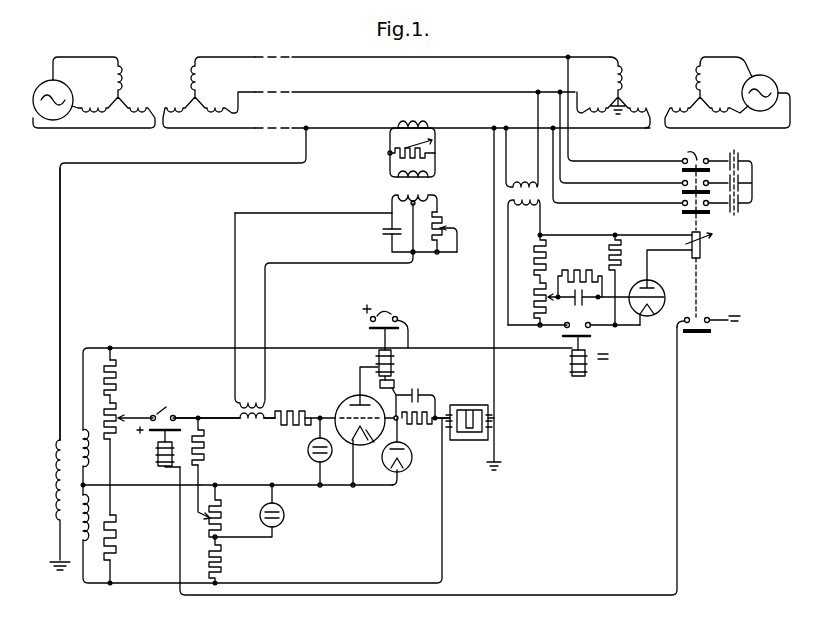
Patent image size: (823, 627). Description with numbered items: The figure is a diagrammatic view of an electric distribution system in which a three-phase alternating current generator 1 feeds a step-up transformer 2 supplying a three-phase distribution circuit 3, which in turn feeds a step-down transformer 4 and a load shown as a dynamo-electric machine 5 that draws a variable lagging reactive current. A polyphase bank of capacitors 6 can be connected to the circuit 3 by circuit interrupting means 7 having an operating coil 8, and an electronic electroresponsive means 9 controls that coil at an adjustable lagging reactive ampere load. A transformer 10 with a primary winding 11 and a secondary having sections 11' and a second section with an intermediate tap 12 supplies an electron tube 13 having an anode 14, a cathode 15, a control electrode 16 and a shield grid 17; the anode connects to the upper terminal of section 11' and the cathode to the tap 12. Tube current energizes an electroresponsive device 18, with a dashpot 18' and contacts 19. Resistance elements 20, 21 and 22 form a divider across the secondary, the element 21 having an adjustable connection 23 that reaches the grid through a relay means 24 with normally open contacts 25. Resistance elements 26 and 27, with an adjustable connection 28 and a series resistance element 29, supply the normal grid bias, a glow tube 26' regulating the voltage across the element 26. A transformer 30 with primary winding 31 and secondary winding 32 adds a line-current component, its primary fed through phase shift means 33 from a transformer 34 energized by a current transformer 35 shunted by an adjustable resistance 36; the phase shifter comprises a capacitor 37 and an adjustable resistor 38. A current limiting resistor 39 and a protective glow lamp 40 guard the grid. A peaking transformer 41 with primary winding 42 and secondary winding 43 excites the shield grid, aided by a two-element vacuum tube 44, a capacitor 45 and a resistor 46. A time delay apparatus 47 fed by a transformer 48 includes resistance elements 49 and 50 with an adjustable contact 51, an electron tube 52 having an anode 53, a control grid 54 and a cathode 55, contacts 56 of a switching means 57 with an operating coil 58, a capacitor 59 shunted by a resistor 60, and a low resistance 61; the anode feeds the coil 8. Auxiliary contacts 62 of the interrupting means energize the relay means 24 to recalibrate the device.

The three-phase alternating current generator 1 is at (60, 86).
The step-up transformer 2 is at (168, 95).
The three phase distribution circuit 3 is at (335, 128).
The step-down transformer 4 is at (659, 89).
The dynamo-electric machine 5 is at (760, 78).
The polyphase connected bank of capacitors 6 is at (740, 212).
The circuit interrupting means 7 is at (631, 143).
The operating coil 8 is at (702, 244).
The electronic electroresponsive means 9 is at (322, 527).
The transformer 10 is at (60, 413).
The primary winding 11 is at (51, 505).
The secondary winding section 11' is at (97, 463).
The tap 12 is at (141, 478).
The electron tube 13 is at (349, 398).
The anode 14 is at (346, 405).
The cathode 15 is at (363, 446).
The control electrode 16 is at (340, 418).
The shield grid 17 is at (382, 415).
The electroresponsive device 18 is at (394, 354).
The dashpot 18' is at (379, 394).
The contacts 19 is at (384, 309).
The resistance element 20 is at (118, 378).
The resistance element 21 is at (123, 414).
The resistance element 22 is at (118, 531).
The adjustable connection 23 is at (135, 413).
The relay means 24 is at (156, 463).
The normally open contacts 25 is at (175, 409).
The resistance element 26 is at (228, 510).
The glow tube 26' is at (264, 510).
The resistance element 27 is at (222, 554).
The adjustable connection 28 is at (197, 505).
The resistance element 29 is at (207, 459).
The transformer 30 is at (235, 403).
The primary winding 31 is at (324, 310).
The secondary winding 32 is at (250, 425).
The phase shift means 33 is at (476, 189).
The transformer 34 is at (393, 187).
The current transformer 35 is at (430, 124).
The adjustable resistance 36 is at (436, 153).
The capacitor 37 is at (381, 232).
The adjustable resistor 38 is at (446, 224).
The current limiting resistor 39 is at (295, 428).
The glow lamp 40 is at (310, 459).
The peaking transformer 41 is at (478, 442).
The primary winding 42 is at (492, 422).
The secondary winding 43 is at (448, 428).
The two-element vacuum tube 44 is at (399, 458).
The capacitor 45 is at (414, 389).
The resistor 46 is at (433, 407).
The time delay apparatus 47 is at (652, 351).
The transformer 48 is at (542, 206).
The resistance element 49 is at (535, 253).
The resistance element 50 is at (534, 298).
The adjustable contact 51 is at (550, 303).
The electron tube 52 is at (645, 290).
The anode 53 is at (653, 285).
The control grid 54 is at (665, 296).
The cathode 55 is at (658, 313).
The contacts 56 is at (592, 328).
The switching means 57 is at (571, 361).
The operating coil 58 is at (587, 372).
The capacitor 59 is at (578, 306).
The resistor 60 is at (578, 270).
The resistance 61 is at (622, 260).
The auxiliary contacts 62 is at (708, 316).